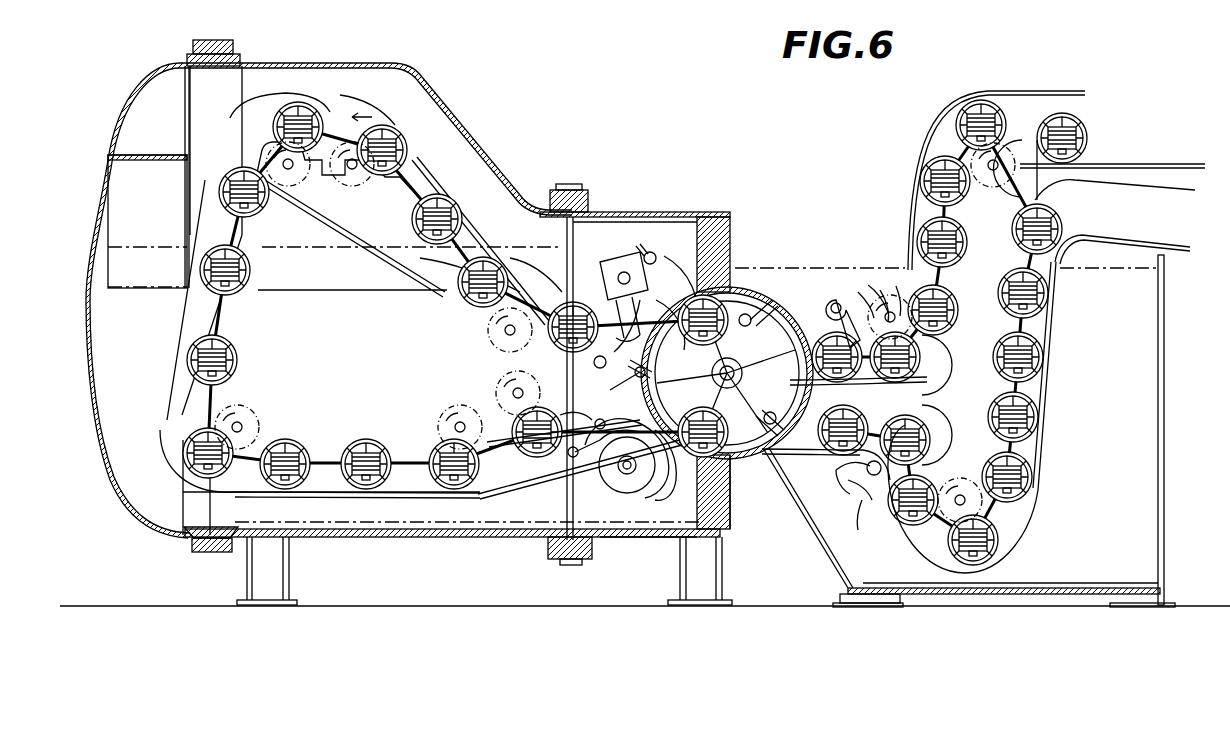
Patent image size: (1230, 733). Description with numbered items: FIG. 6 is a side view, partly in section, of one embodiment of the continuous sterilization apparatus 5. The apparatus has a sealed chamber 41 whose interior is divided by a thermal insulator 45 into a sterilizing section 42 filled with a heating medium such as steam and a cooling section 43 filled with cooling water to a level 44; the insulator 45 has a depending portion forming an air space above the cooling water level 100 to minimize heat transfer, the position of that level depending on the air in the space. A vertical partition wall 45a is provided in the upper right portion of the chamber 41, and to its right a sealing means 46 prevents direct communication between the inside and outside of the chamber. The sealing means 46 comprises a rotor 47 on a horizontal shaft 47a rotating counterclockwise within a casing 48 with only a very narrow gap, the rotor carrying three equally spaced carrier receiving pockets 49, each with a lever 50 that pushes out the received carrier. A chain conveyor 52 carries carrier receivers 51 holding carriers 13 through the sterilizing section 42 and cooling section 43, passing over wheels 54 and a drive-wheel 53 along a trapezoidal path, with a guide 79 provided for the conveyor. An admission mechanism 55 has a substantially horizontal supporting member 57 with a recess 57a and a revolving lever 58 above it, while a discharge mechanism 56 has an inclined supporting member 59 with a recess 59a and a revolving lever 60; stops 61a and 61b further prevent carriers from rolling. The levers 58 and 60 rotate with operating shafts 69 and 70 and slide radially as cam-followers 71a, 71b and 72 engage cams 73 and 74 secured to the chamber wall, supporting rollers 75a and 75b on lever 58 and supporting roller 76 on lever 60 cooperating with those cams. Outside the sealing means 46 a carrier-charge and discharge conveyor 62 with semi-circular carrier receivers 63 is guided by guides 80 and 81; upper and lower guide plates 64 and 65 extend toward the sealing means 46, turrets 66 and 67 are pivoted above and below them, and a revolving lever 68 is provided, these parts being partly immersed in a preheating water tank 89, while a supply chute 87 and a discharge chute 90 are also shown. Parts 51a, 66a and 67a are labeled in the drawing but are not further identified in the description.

The continuous sterilization apparatus 5 is at (538, 145).
The carrier 13 is at (445, 208).
The sealed chamber 41 is at (398, 62).
The sterilizing section 42 is at (266, 75).
The cooling section 43 is at (336, 472).
The cooling water level 44 is at (188, 250).
The thermal insulator 45 is at (178, 158).
The vertical partition wall 45a is at (535, 280).
The sealing means 46 is at (766, 292).
The rotor 47 is at (762, 440).
The horizontal shaft 47a is at (752, 312).
The casing 48 is at (732, 290).
The carrier receiving pocket 49 is at (828, 338).
The lever 50 is at (788, 436).
The carrier receiver 51 is at (330, 490).
The chain guide 51a is at (250, 478).
The chain conveyor 52 is at (420, 177).
The drive-wheel 53 is at (490, 328).
The wheel 54 is at (294, 190).
The admission mechanism 55 is at (665, 226).
The discharge mechanism 56 is at (620, 540).
The horizontal supporting member 57 is at (576, 412).
The recess 57a is at (608, 410).
The revolving lever 58 is at (568, 322).
The inclined supporting member 59 is at (518, 472).
The recess 59a is at (564, 445).
The revolving lever 60 is at (640, 482).
The stop 61a is at (618, 383).
The stop 61b is at (574, 458).
The carrier-charge and discharge conveyor 62 is at (1052, 340).
The semi-circular carrier receiver 63 is at (1014, 146).
The upper guide plate 64 is at (868, 388).
The lower guide plate 65 is at (838, 468).
The turret 66 is at (935, 336).
The guide arm 66a is at (884, 290).
The turret 67 is at (862, 512).
The lever pivot 67a is at (868, 488).
The revolving lever 68 is at (858, 290).
The operating shaft 69 is at (620, 268).
The operating shaft 70 is at (620, 478).
The cam-follower 71a is at (629, 357).
The cam-follower 71b is at (636, 246).
The cam-follower 72 is at (676, 484).
The cam 73 is at (674, 280).
The cam 74 is at (562, 512).
The supporting roller 75a is at (598, 364).
The supporting roller 75b is at (649, 252).
The supporting roller 76 is at (732, 490).
The guide 79 is at (404, 484).
The guide 80 is at (1062, 92).
The guide 81 is at (1046, 410).
The supply chute 87 is at (1140, 163).
The water tank 89 is at (1164, 474).
The discharge chute 90 is at (1125, 242).
The cooling water level 100 is at (152, 262).